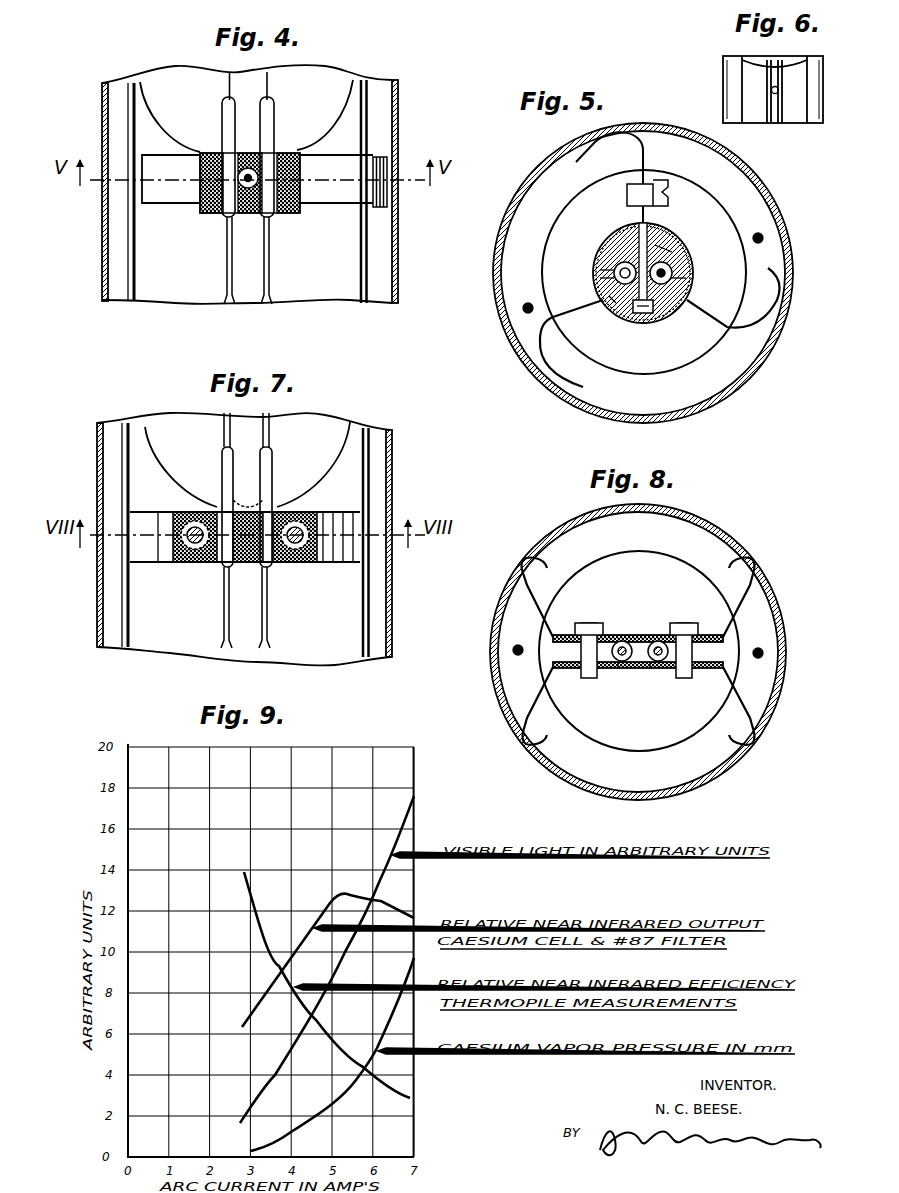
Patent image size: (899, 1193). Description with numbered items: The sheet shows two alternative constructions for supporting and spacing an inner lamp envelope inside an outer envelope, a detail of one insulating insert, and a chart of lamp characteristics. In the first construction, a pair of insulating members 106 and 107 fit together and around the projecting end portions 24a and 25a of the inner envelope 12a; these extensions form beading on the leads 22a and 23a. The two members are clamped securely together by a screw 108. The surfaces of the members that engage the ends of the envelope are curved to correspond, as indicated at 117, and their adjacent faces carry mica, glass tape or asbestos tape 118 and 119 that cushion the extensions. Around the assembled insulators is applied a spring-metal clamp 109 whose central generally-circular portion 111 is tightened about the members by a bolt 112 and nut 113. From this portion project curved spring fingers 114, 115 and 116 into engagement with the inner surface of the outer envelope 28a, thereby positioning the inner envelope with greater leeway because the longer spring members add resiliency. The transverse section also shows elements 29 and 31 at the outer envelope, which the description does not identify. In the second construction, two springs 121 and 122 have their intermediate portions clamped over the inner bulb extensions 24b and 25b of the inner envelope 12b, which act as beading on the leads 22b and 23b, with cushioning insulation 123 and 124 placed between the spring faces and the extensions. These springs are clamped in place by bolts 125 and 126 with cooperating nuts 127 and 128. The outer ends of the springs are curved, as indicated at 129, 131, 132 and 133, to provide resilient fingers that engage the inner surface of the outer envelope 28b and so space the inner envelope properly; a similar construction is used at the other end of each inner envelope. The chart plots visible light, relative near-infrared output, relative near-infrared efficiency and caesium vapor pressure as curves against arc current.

In FIG. 4, the inner envelope 12a is at (332, 88).
In FIG. 5, the inner envelope 12a is at (728, 238).
In FIG. 7, the inner envelope 12b is at (322, 431).
In FIG. 8, the inner envelope 12b is at (668, 744).
In FIG. 4, the lead 22a is at (226, 268).
In FIG. 5, the lead 22a is at (610, 303).
In FIG. 7, the lead 22b is at (225, 622).
In FIG. 8, the lead 22b is at (619, 669).
In FIG. 4, the lead 23a is at (270, 268).
In FIG. 5, the lead 23a is at (688, 291).
In FIG. 7, the lead 23b is at (262, 625).
In FIG. 8, the lead 23b is at (650, 669).
In FIG. 4, the projecting end portion 24a is at (222, 215).
In FIG. 5, the projecting end portion 24a is at (607, 259).
In FIG. 7, the inner bulb extension 24b is at (222, 566).
In FIG. 8, the inner bulb extension 24b is at (619, 642).
In FIG. 4, the projecting end portion 25a is at (277, 214).
In FIG. 5, the projecting end portion 25a is at (691, 268).
In FIG. 7, the inner bulb extension 25b is at (274, 566).
In FIG. 8, the inner bulb extension 25b is at (658, 642).
In FIG. 4, the outer envelope 28a is at (398, 112).
In FIG. 5, the outer envelope 28a is at (745, 375).
In FIG. 7, the outer envelope 28b is at (392, 460).
In FIG. 8, the outer envelope 28b is at (784, 614).
In FIG. 4, the lead-in conductor 29 is at (120, 118).
In FIG. 5, the lead-in conductor 29 is at (522, 308).
In FIG. 7, the lead-in conductor 29 is at (124, 472).
In FIG. 8, the lead-in conductor 29 is at (513, 652).
In FIG. 4, the lead-in conductor 31 is at (367, 133).
In FIG. 5, the lead-in conductor 31 is at (764, 238).
In FIG. 7, the lead-in conductor 31 is at (369, 444).
In FIG. 8, the lead-in conductor 31 is at (765, 653).
In FIG. 5, the insulating member 106 is at (619, 241).
In FIG. 4, the insulating member 107 is at (300, 151).
In FIG. 5, the insulating member 107 is at (692, 283).
In FIG. 6, the insulating member 107 is at (812, 122).
In FIG. 4, the screw 108 is at (256, 203).
In FIG. 5, the screw 108 is at (648, 318).
In FIG. 4, the spring-metal clamp 109 is at (300, 196).
In FIG. 5, the spring-metal clamp 109 is at (680, 246).
In FIG. 4, the central generally-circular portion 111 is at (300, 168).
In FIG. 5, the central generally-circular portion 111 is at (631, 315).
In FIG. 5, the bolt 112 is at (664, 196).
In FIG. 5, the nut 113 is at (627, 191).
In FIG. 5, the curved spring finger 114 is at (625, 129).
In FIG. 4, the curved spring finger 115 is at (387, 201).
In FIG. 5, the curved spring finger 115 is at (778, 277).
In FIG. 4, the curved spring finger 116 is at (152, 203).
In FIG. 5, the curved spring finger 116 is at (540, 370).
In FIG. 6, the curved surface 117 is at (742, 61).
In FIG. 5, the cushioning tape 118 is at (600, 272).
In FIG. 4, the cushioning tape 119 is at (206, 153).
In FIG. 5, the cushioning tape 119 is at (598, 283).
In FIG. 8, the spring 121 is at (528, 599).
In FIG. 7, the spring 122 is at (142, 552).
In FIG. 8, the spring 122 is at (527, 708).
In FIG. 7, the cushioning insulation 123 is at (245, 537).
In FIG. 8, the cushioning insulation 123 is at (640, 635).
In FIG. 7, the cushioning insulation 124 is at (305, 512).
In FIG. 8, the cushioning insulation 124 is at (640, 668).
In FIG. 7, the bolt 125 is at (192, 514).
In FIG. 8, the bolt 125 is at (588, 679).
In FIG. 7, the bolt 126 is at (300, 533).
In FIG. 8, the bolt 126 is at (688, 679).
In FIG. 8, the nut 127 is at (586, 623).
In FIG. 8, the nut 128 is at (690, 623).
In FIG. 8, the curved outer end 129 is at (528, 560).
In FIG. 8, the curved outer end 131 is at (752, 566).
In FIG. 8, the curved outer end 132 is at (752, 742).
In FIG. 8, the curved outer end 133 is at (530, 742).